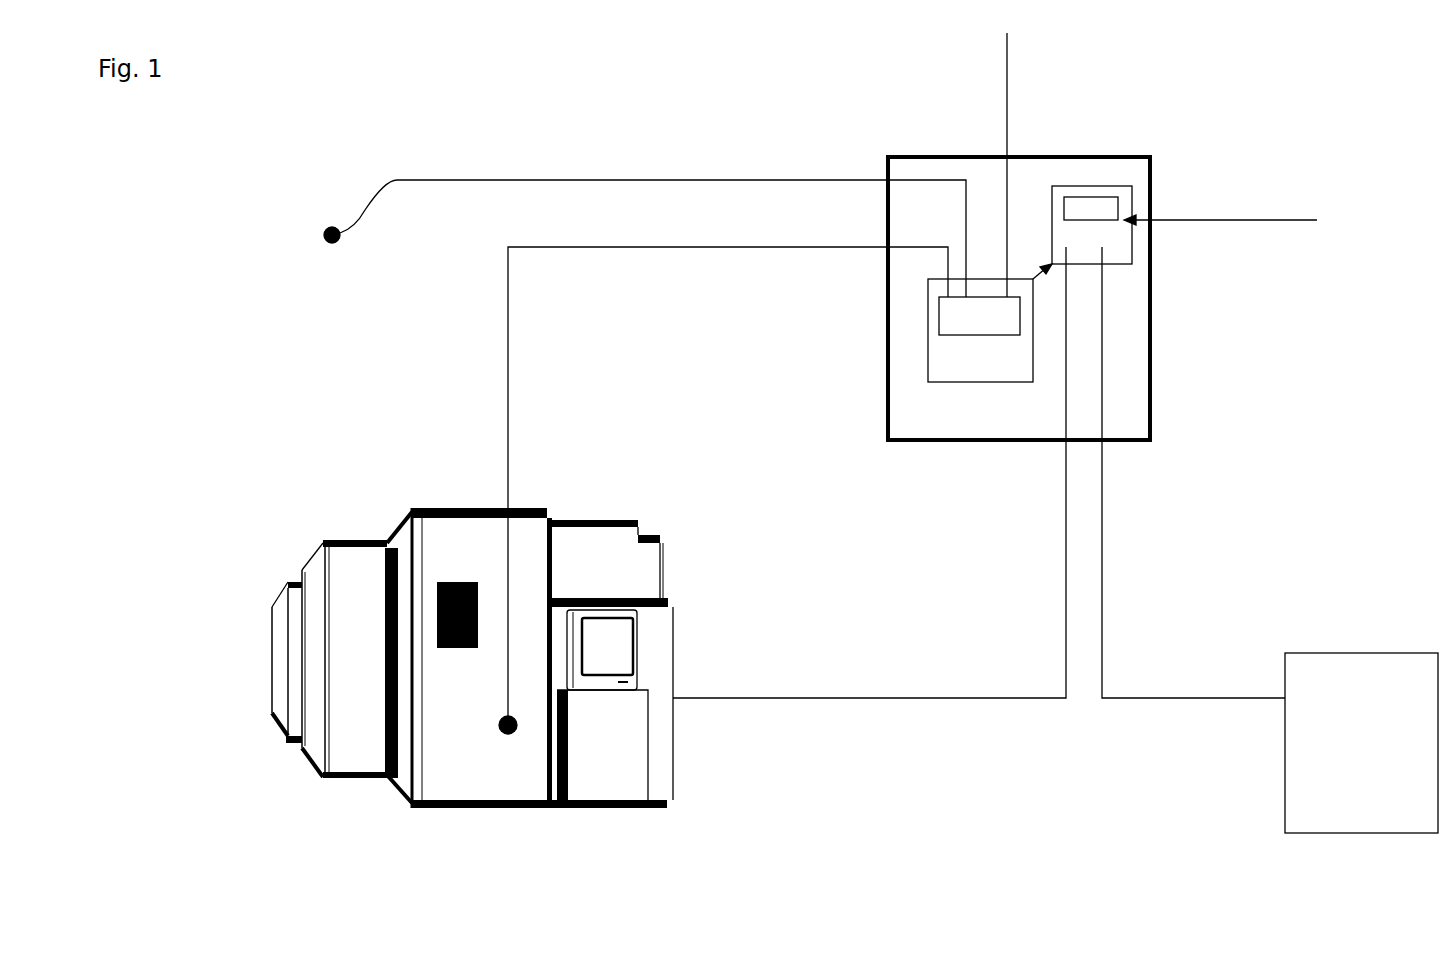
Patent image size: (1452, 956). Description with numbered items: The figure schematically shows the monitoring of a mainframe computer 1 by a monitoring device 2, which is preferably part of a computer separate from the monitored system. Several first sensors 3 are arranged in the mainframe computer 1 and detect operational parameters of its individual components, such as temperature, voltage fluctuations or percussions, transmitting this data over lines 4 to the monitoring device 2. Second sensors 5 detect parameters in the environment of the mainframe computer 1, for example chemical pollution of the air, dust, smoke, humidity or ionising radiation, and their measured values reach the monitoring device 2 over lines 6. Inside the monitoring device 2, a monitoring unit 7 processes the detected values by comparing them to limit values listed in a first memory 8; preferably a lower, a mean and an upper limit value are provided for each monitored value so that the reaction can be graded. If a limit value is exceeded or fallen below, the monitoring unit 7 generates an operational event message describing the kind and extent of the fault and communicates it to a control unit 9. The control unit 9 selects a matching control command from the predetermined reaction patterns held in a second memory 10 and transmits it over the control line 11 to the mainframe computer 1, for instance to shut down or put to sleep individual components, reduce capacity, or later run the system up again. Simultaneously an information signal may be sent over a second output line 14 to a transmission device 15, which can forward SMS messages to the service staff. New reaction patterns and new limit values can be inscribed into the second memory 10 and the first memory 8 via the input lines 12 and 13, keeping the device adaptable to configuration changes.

The mainframe computer 1 is at (440, 795).
The monitoring device 2 is at (988, 173).
The first sensors 3 is at (503, 712).
The lines 4 is at (733, 248).
The second sensors 5 is at (323, 242).
The lines 6 is at (635, 180).
The monitoring unit 7 is at (1008, 370).
The first memory 8 is at (950, 325).
The control unit 9 is at (1120, 238).
The second memory 10 is at (1112, 205).
The mainframe computer 11 is at (1065, 550).
The input line 12 is at (1253, 201).
The input line 13 is at (1084, 165).
The second output line 14 is at (1102, 567).
The transmission device 15 is at (1361, 743).